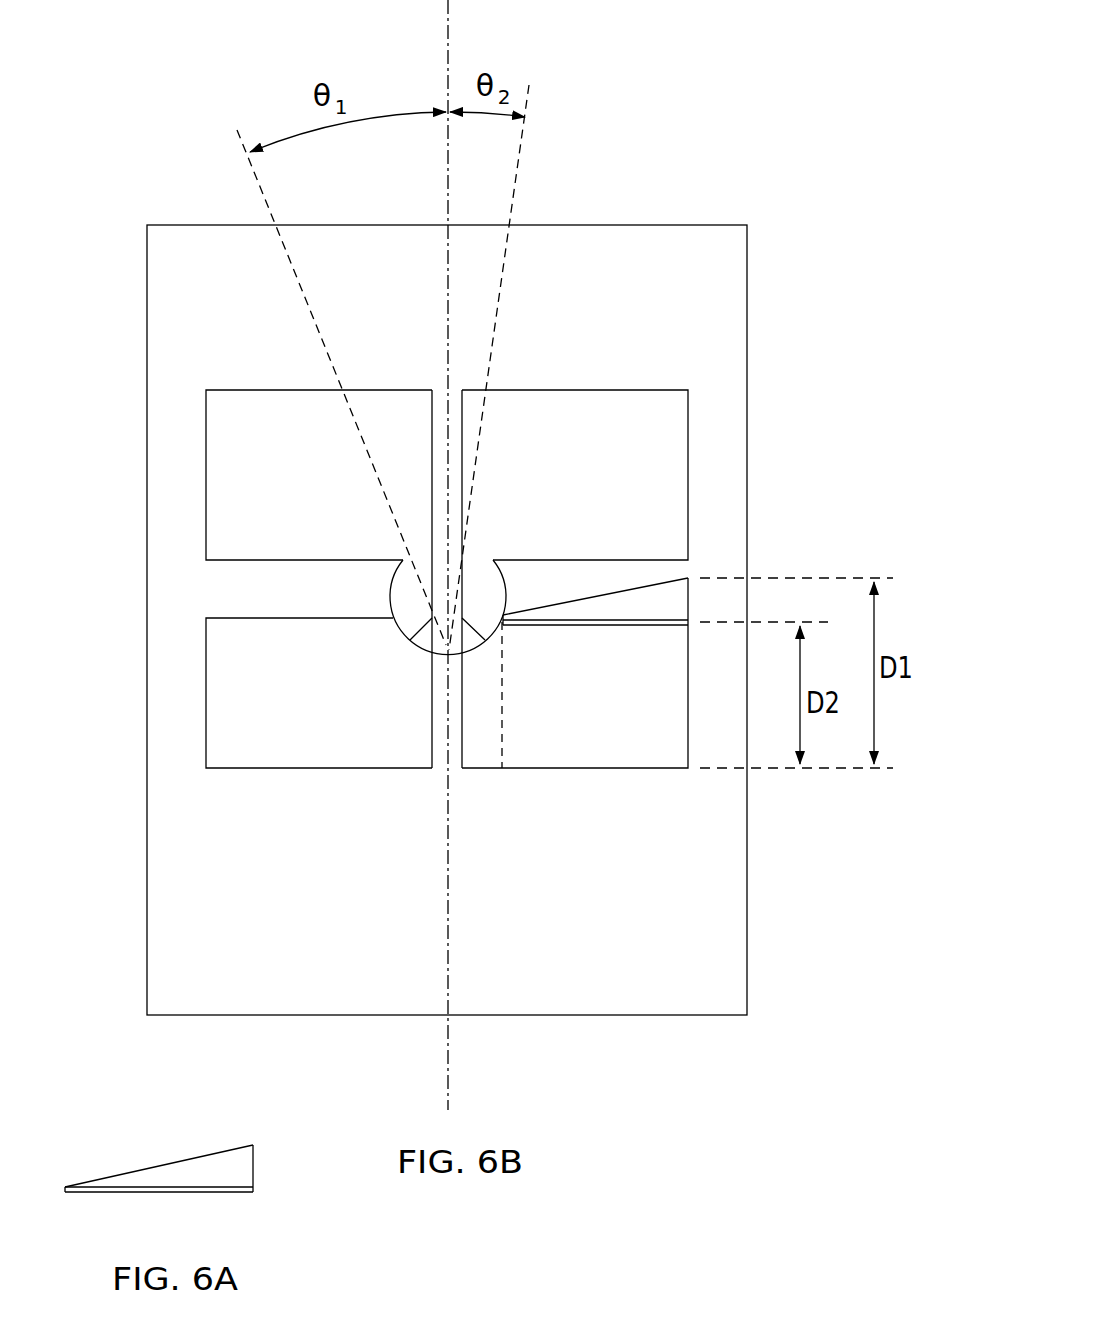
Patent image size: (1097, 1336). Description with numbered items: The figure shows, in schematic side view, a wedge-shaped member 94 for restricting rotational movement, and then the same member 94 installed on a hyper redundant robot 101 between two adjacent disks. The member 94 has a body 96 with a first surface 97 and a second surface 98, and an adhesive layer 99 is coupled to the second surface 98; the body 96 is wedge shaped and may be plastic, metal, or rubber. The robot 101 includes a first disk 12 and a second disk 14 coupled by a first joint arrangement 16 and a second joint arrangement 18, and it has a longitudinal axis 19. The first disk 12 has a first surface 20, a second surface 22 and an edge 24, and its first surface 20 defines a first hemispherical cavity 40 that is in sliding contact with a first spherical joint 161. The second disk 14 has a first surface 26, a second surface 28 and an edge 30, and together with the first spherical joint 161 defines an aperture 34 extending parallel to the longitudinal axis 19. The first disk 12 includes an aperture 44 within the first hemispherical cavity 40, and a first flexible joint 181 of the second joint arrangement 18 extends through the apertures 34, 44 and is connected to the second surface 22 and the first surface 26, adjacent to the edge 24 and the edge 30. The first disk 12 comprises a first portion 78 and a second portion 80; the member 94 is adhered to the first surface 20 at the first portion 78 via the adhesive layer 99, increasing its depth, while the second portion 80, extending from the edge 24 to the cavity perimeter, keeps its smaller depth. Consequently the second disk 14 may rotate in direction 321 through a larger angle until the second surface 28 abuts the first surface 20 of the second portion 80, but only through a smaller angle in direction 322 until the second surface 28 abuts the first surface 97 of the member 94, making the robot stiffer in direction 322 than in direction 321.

In FIG. 6B, the hyper redundant robot 101 is at (808, 138).
In FIG. 6B, the second disk 14 is at (246, 405).
In FIG. 6B, the first surface of the second disk 26 is at (566, 390).
In FIG. 6B, the first disk 12 is at (215, 683).
In FIG. 6B, the first portion 78 is at (578, 750).
In FIG. 6B, the edge of the second disk 30 is at (205, 425).
In FIG. 6B, the direction 321 is at (187, 432).
In FIG. 6B, the direction 322 is at (708, 432).
In FIG. 6B, the aperture 34 is at (432, 440).
In FIG. 6B, the aperture 44 is at (432, 728).
In FIG. 6B, the first flexible joint 181 is at (432, 690).
In FIG. 6B, the first joint arrangement 16 is at (106, 583).
In FIG. 6B, the first surface of the first disk 20 is at (246, 618).
In FIG. 6B, the first spherical joint 161 is at (394, 585).
In FIG. 6B, the first hemispherical cavity 40 is at (403, 633).
In FIG. 6B, the second surface of the first disk 22 is at (480, 770).
In FIG. 6B, the member 94 is at (654, 602).
In FIG. 6A, the member 94 is at (194, 1150).
In FIG. 6B, the first surface of the body 97 is at (611, 592).
In FIG. 6A, the first surface of the body 97 is at (240, 1145).
In FIG. 6B, the body 96 is at (651, 614).
In FIG. 6A, the body 96 is at (250, 1165).
In FIG. 6B, the second surface of the body 98 is at (598, 608).
In FIG. 6A, the second surface of the body 98 is at (130, 1185).
In FIG. 6B, the adhesive layer 99 is at (627, 627).
In FIG. 6A, the adhesive layer 99 is at (238, 1195).
In FIG. 6B, the second surface of the second disk 28 is at (562, 561).
In FIG. 6B, the edge of the first disk 24 is at (205, 712).
In FIG. 6B, the second portion 80 is at (300, 769).
In FIG. 6B, the second joint arrangement 18 is at (424, 795).
In FIG. 6B, the longitudinal axis 19 is at (452, 1062).